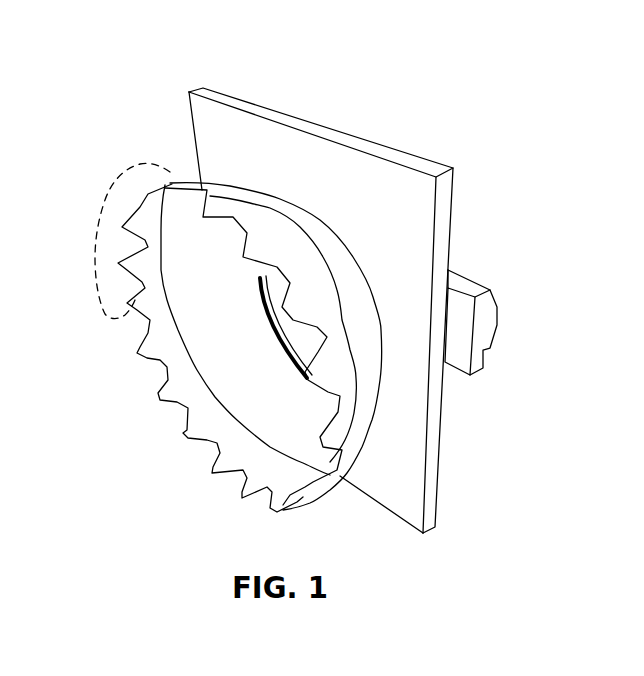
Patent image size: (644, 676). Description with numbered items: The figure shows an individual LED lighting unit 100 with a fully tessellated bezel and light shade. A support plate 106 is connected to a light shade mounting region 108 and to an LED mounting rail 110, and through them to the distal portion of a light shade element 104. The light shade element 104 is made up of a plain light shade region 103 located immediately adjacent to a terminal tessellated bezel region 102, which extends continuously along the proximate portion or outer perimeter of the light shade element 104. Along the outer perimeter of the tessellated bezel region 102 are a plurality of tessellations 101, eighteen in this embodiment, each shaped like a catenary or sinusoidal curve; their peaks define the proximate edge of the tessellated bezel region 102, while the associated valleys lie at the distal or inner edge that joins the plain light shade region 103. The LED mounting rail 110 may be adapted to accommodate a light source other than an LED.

The lighting unit 100 is at (80, 117).
The tessellations 101 is at (104, 230).
The tessellated bezel region 102 is at (258, 250).
The plain light shade region 103 is at (318, 255).
The light shade element 104 is at (223, 347).
The support plate 106 is at (397, 253).
The light shade mounting region 108 is at (287, 362).
The LED mounting rail 110 is at (455, 328).